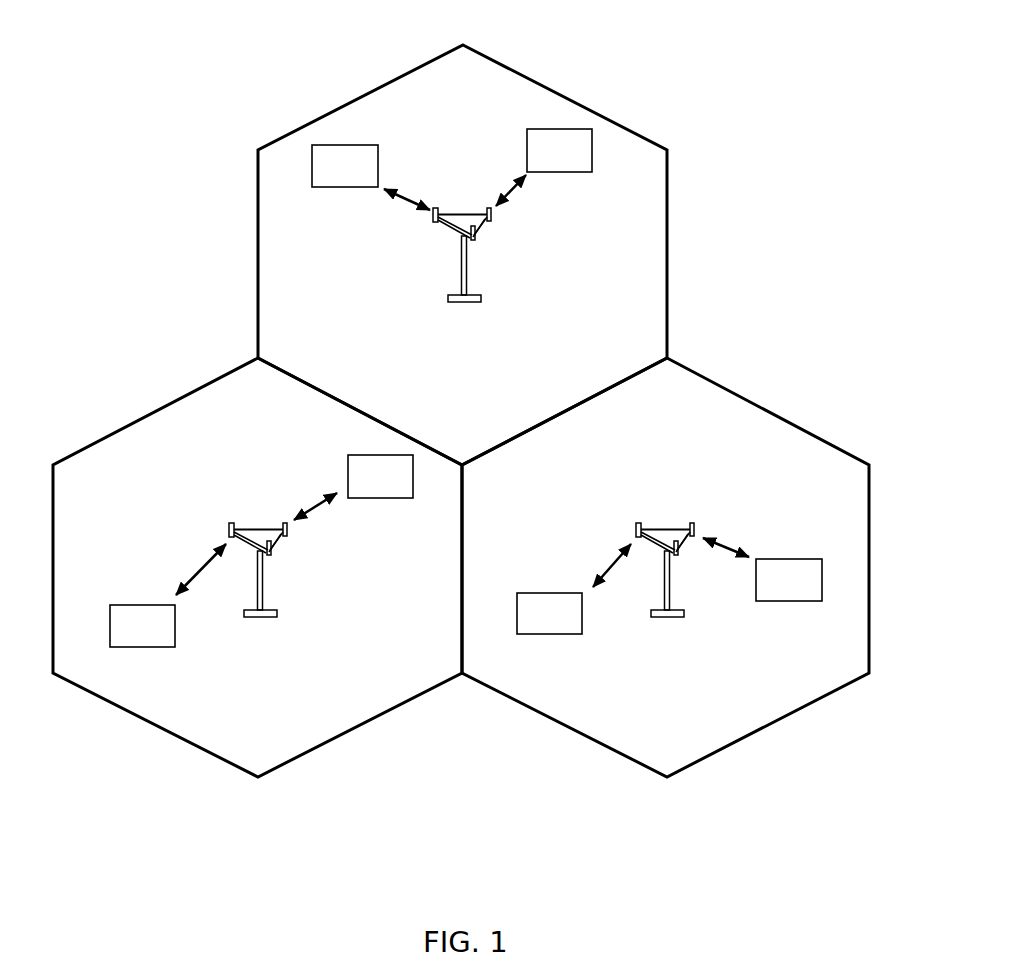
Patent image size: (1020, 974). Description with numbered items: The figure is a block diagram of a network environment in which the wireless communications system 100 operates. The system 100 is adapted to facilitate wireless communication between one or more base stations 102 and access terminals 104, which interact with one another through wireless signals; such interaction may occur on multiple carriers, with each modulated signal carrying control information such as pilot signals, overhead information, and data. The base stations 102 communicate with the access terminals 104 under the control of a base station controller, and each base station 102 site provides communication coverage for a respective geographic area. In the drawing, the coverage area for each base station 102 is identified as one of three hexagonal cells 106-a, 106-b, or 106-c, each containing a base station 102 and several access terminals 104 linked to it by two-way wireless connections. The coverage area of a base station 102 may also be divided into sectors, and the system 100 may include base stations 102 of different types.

The wireless communications system 100 is at (806, 88).
The base station 102 is at (465, 212).
The access terminal 104 is at (333, 188).
The cell 106-a is at (134, 421).
The cell 106-b is at (549, 87).
The cell 106-c is at (768, 410).